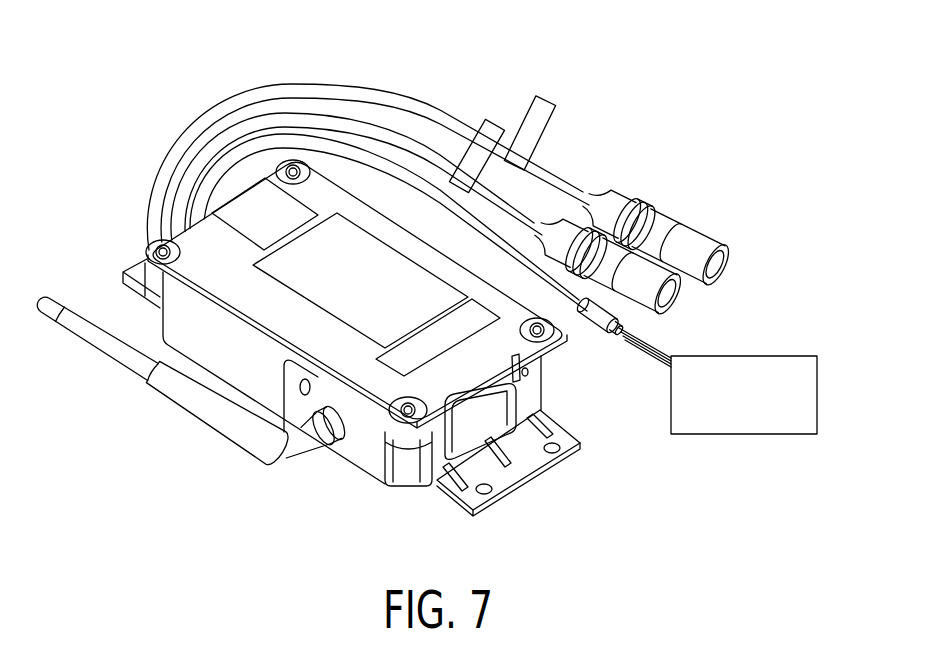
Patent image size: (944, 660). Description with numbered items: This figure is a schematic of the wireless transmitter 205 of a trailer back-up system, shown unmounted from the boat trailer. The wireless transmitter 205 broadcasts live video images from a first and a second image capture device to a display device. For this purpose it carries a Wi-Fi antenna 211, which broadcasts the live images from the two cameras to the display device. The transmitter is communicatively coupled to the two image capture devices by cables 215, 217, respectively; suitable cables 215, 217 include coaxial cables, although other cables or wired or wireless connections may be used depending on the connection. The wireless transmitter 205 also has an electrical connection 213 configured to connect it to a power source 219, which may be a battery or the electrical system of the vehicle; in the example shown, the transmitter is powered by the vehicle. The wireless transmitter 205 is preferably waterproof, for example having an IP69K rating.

The wireless transmitter 205 is at (118, 111).
The Wi-Fi antenna 211 is at (183, 398).
The electrical connection 213 is at (658, 352).
The cable 215 is at (453, 122).
The cable 217 is at (533, 216).
The power source 219 is at (818, 396).